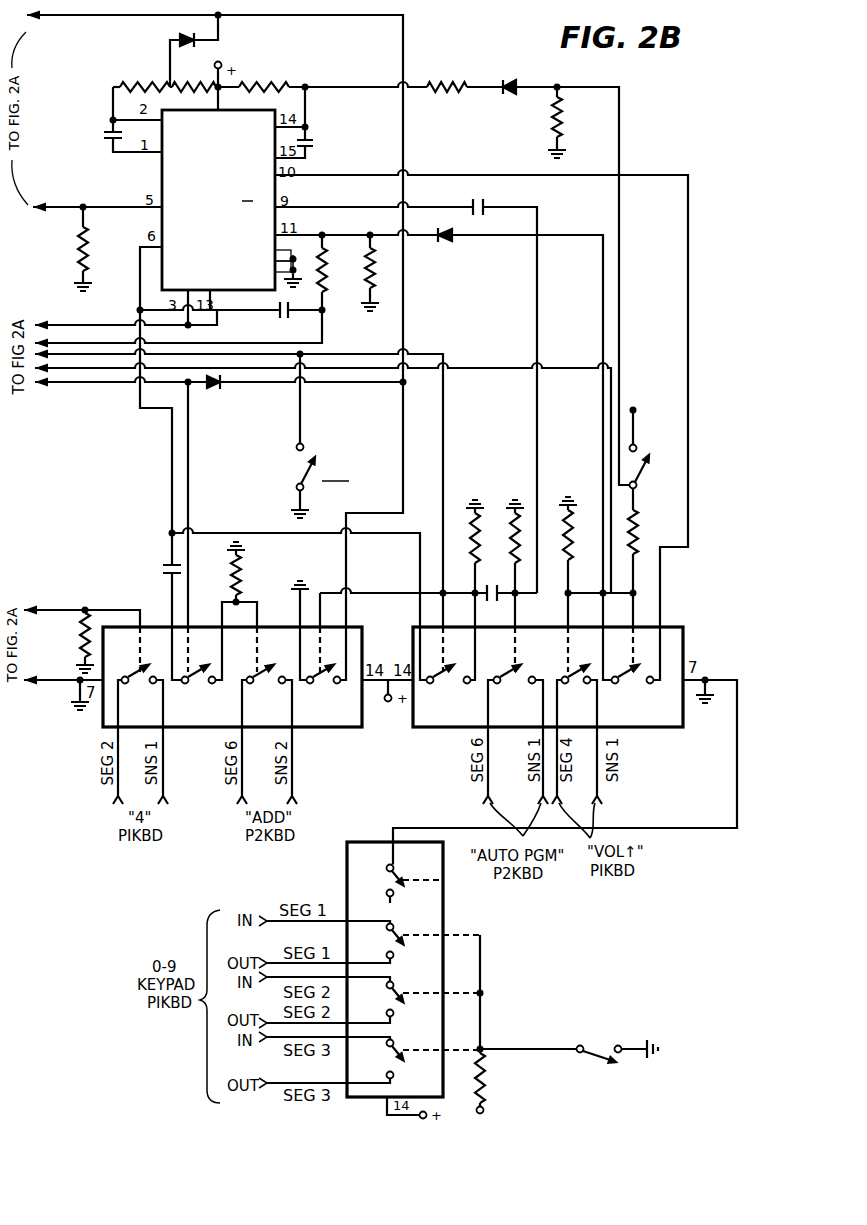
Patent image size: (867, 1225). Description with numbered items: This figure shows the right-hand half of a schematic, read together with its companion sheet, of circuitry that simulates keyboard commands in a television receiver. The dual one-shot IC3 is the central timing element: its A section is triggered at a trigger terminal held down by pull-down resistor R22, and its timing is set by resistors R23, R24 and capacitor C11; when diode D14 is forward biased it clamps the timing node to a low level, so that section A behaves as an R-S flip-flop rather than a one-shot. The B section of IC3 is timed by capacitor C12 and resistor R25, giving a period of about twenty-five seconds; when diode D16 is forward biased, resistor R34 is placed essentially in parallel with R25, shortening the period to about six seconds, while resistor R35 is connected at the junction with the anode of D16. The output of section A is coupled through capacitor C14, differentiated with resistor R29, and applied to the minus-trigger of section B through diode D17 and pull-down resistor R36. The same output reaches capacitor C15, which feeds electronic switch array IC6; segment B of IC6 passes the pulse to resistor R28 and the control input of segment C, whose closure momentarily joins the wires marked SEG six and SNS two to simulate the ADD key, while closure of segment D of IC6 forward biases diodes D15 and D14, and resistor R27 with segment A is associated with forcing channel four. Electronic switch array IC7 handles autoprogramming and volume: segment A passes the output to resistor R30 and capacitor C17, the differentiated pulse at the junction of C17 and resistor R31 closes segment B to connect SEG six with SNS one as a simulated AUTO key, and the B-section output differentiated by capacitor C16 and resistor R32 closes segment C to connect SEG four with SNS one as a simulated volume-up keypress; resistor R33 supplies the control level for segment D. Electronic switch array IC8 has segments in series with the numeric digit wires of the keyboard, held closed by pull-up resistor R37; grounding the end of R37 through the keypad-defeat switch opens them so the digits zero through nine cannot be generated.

The dual one-shot IC3 is at (232, 200).
The electronic switch array IC6 is at (232, 677).
The electronic switch array IC7 is at (548, 677).
The electronic switch array IC8 is at (413, 969).
The pull-down resistor R22 is at (103, 249).
The timing resistor R23 is at (141, 72).
The timing resistor R24 is at (194, 72).
The timing resistor R25 is at (264, 72).
The resistor R27 is at (69, 641).
The resistor R28 is at (246, 611).
The resistor R29 is at (338, 272).
The resistor R30 is at (480, 521).
The resistor R31 is at (519, 521).
The resistor R32 is at (575, 515).
The resistor R33 is at (654, 522).
The resistor R34 is at (446, 70).
The resistor R35 is at (576, 122).
The pull-down resistor R36 is at (373, 268).
The pull-up resistor R37 is at (502, 1083).
The timing capacitor C11 is at (117, 131).
The timing capacitor C12 is at (309, 127).
The capacitor C14 is at (291, 313).
The capacitor C15 is at (157, 558).
The capacitor C16 is at (489, 205).
The capacitor C17 is at (493, 594).
The diode D14 is at (190, 51).
The diode D15 is at (219, 392).
The diode D16 is at (514, 79).
The diode D17 is at (455, 245).